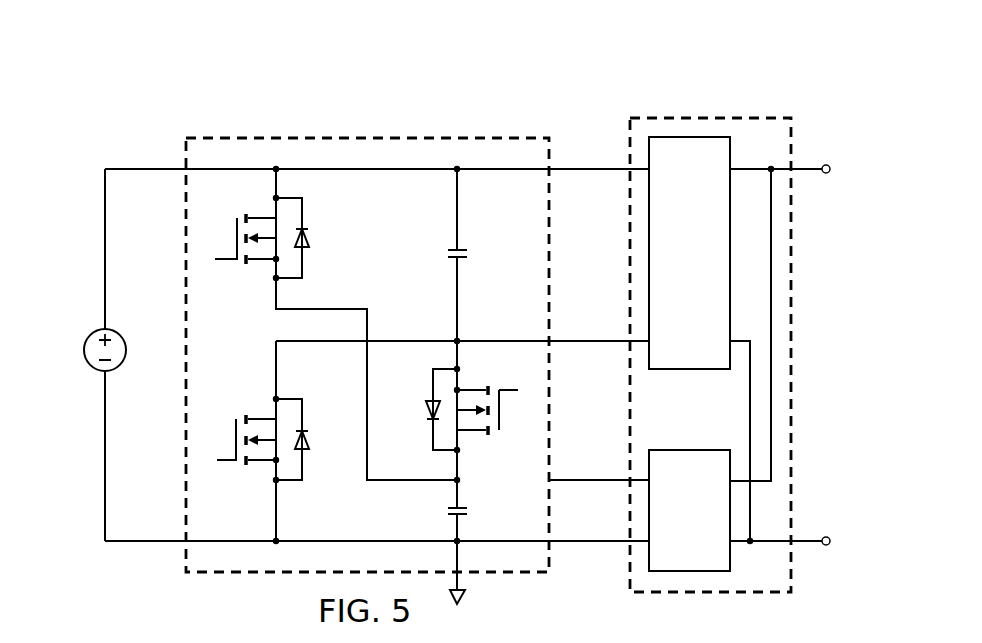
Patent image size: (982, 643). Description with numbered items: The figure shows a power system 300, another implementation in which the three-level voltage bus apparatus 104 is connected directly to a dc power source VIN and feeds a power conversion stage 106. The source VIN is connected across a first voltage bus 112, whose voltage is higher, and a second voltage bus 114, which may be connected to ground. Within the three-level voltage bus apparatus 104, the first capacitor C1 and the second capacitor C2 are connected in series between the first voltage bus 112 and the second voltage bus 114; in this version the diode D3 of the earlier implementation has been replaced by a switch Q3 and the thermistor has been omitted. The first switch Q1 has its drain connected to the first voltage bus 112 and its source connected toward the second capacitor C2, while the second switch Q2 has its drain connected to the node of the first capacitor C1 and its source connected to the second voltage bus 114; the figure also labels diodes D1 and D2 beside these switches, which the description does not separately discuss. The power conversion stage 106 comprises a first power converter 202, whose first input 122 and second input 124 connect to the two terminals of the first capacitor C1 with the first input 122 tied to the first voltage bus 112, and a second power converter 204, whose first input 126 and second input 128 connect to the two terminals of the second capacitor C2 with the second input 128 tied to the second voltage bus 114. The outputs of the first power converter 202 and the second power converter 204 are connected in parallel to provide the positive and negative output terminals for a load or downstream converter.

The power system 300 is at (236, 70).
The three-level voltage bus apparatus 104 is at (355, 134).
The power conversion stage 106 is at (710, 115).
The first voltage bus 112 is at (147, 167).
The second voltage bus 114 is at (147, 545).
The first input 122 is at (592, 167).
The second input 124 is at (589, 339).
The first input 126 is at (589, 478).
The second input 128 is at (592, 545).
The first power converter 202 is at (689, 253).
The second power converter 204 is at (689, 510).
The first switch Q1 is at (245, 223).
The second switch Q2 is at (246, 441).
The switch Q3 is at (487, 410).
The first diode D1 is at (307, 238).
The second diode D2 is at (307, 439).
The diode D3 is at (429, 409).
The first capacitor C1 is at (472, 255).
The second capacitor C2 is at (472, 510).
The input ac source VIN is at (86, 355).